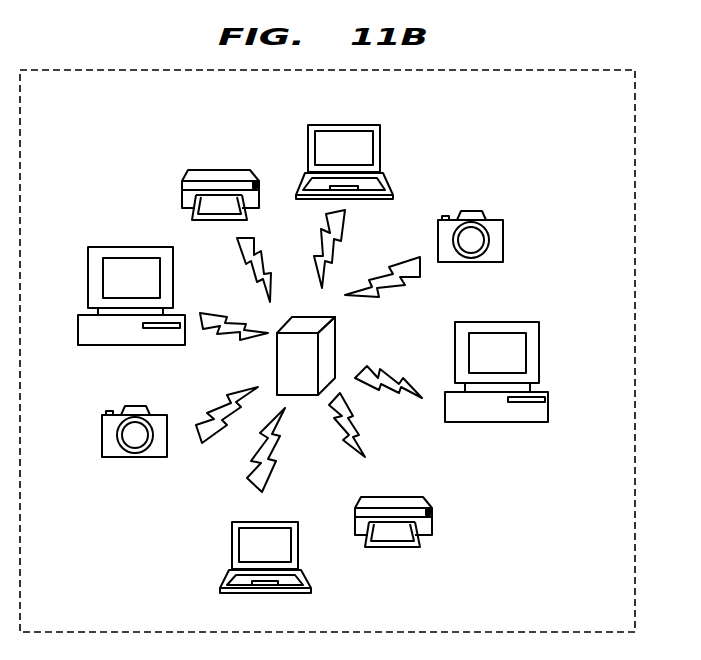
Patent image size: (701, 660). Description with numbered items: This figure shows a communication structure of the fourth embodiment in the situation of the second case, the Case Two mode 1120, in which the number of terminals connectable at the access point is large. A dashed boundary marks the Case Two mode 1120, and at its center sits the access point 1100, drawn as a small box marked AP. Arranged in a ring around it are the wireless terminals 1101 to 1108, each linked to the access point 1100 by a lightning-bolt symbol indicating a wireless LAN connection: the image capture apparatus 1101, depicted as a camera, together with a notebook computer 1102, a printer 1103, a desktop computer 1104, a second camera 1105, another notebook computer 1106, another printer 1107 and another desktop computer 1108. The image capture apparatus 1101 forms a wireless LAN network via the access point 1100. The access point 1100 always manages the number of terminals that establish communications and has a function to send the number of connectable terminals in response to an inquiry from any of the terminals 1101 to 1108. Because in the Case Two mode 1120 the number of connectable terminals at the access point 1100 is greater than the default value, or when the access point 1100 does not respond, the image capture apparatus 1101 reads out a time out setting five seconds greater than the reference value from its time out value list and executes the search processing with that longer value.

The access point 1100 is at (337, 352).
The image capture apparatus 1101 is at (127, 457).
The terminal 1102 is at (227, 535).
The terminal 1103 is at (433, 520).
The terminal 1104 is at (493, 422).
The terminal 1105 is at (503, 235).
The terminal 1106 is at (378, 145).
The terminal 1107 is at (182, 188).
The terminal 1108 is at (108, 345).
The Case 2 mode 1120 is at (535, 70).